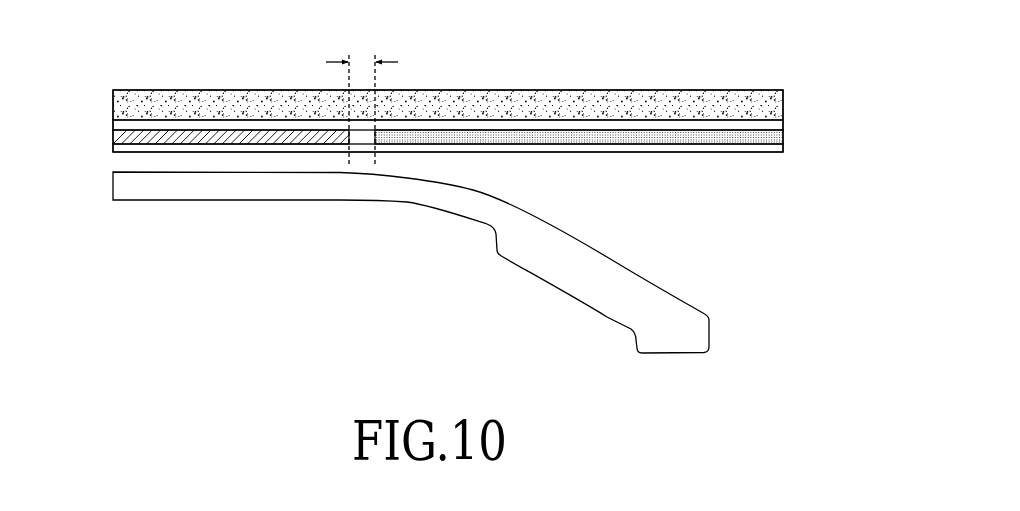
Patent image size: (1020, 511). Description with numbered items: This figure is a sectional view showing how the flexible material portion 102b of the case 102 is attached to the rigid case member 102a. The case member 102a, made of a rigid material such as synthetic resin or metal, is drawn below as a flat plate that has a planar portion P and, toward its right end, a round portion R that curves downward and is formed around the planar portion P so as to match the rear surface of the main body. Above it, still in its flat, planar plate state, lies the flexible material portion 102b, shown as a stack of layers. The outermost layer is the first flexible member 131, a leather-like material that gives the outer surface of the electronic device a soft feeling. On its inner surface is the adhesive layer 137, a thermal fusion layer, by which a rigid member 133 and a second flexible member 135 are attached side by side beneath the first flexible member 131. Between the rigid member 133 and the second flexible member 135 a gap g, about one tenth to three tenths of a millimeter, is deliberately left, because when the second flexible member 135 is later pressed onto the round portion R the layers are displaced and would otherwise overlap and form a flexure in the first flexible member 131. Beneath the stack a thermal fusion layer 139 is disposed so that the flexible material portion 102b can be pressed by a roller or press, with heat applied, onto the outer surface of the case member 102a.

The case 102 is at (463, 177).
The case member 102a is at (411, 260).
The flexible material portion 102b is at (463, 120).
The first flexible member 131 is at (784, 92).
The rigid member 133 is at (118, 135).
The second flexible member 135 is at (782, 138).
The adhesive layer 137 is at (774, 126).
The thermal fusion layer 139 is at (765, 151).
The planar portion P is at (193, 165).
The round portion R is at (621, 264).
The gap g is at (362, 97).